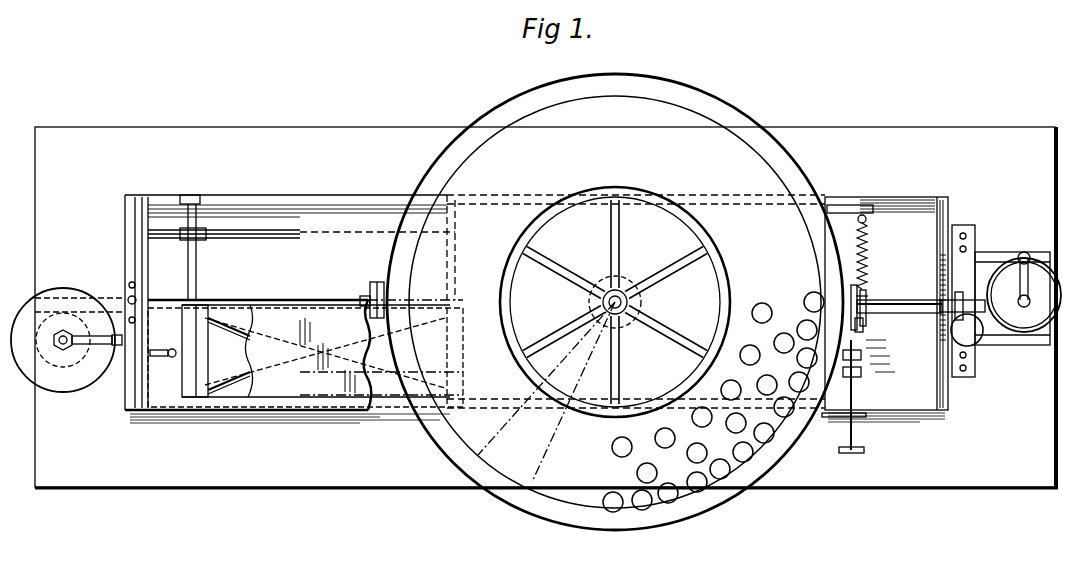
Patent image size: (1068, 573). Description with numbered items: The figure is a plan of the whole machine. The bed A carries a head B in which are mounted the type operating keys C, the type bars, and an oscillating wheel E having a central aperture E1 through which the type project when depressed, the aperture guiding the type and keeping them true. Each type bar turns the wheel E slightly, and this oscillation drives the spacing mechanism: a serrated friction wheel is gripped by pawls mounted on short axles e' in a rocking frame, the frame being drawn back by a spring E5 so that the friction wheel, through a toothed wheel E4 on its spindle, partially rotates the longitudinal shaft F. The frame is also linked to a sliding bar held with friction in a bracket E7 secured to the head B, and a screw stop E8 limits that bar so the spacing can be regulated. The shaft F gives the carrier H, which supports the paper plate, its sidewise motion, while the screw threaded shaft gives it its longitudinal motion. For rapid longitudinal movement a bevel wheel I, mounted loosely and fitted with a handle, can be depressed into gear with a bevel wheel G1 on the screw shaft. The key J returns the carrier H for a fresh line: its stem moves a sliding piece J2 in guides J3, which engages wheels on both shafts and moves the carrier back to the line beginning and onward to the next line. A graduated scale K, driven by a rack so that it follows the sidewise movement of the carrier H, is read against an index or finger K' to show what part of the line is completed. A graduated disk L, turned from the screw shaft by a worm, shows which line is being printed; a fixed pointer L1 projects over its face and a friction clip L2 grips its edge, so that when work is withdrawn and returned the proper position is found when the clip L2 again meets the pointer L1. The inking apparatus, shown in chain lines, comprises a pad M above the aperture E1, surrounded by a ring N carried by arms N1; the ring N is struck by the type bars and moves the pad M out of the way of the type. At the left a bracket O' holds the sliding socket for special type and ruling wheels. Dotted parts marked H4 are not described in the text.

The bed A is at (546, 308).
The head B is at (690, 520).
The type operating keys C is at (612, 449).
The oscillating wheel E is at (622, 350).
The central aperture E1 is at (600, 280).
The toothed wheel E4 is at (905, 300).
The spring E5 is at (866, 228).
The bracket E7 is at (861, 372).
The screw stop E8 is at (853, 432).
The short axles e' is at (864, 354).
The longitudinal rotary shaft F is at (150, 295).
The bevel wheel G1 is at (995, 301).
The carrier H is at (240, 310).
The linkage H4 is at (350, 320).
The bevel wheel I is at (1024, 292).
The key J is at (975, 340).
The sliding piece J2 is at (866, 328).
The guides J3 is at (887, 356).
The graduated scale K is at (276, 321).
The index or finger K' is at (146, 309).
The graduated disk L is at (28, 352).
The fixed pointer L1 is at (75, 330).
The clip L2 is at (80, 345).
The inking pad M is at (634, 278).
The ring N is at (642, 305).
The arms N1 is at (575, 355).
The bracket O' is at (368, 292).